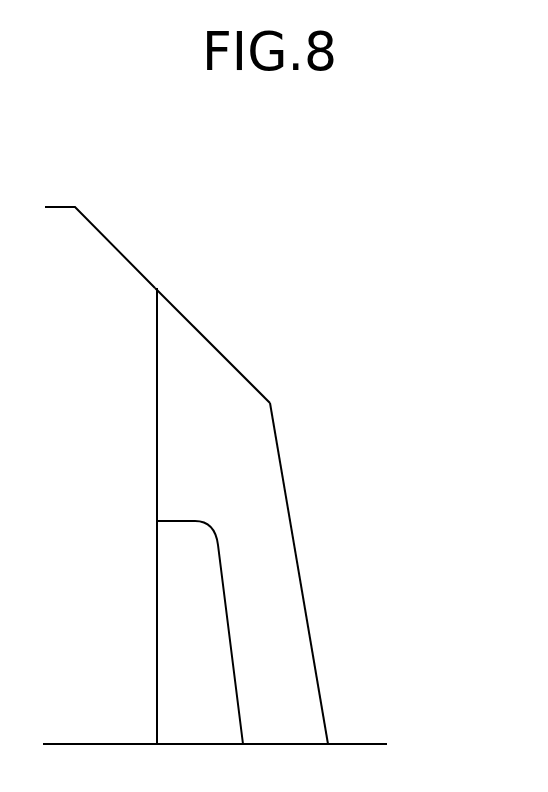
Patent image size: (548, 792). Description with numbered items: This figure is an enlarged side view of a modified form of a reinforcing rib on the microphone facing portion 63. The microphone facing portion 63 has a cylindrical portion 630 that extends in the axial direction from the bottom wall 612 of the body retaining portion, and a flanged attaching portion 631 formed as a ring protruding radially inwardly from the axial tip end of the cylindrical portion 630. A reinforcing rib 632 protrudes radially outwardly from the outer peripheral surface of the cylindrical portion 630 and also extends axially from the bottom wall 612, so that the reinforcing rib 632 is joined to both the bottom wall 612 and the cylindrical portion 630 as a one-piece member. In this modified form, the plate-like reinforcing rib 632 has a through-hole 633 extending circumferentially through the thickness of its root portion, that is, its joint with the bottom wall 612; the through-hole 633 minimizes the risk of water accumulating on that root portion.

The microphone facing portion 63 is at (150, 278).
The flanged attaching portion 631 is at (60, 223).
The cylindrical portion 630 is at (158, 455).
The reinforcing rib 632 is at (272, 522).
The through-hole 633 is at (210, 660).
The bottom wall 612 is at (358, 744).